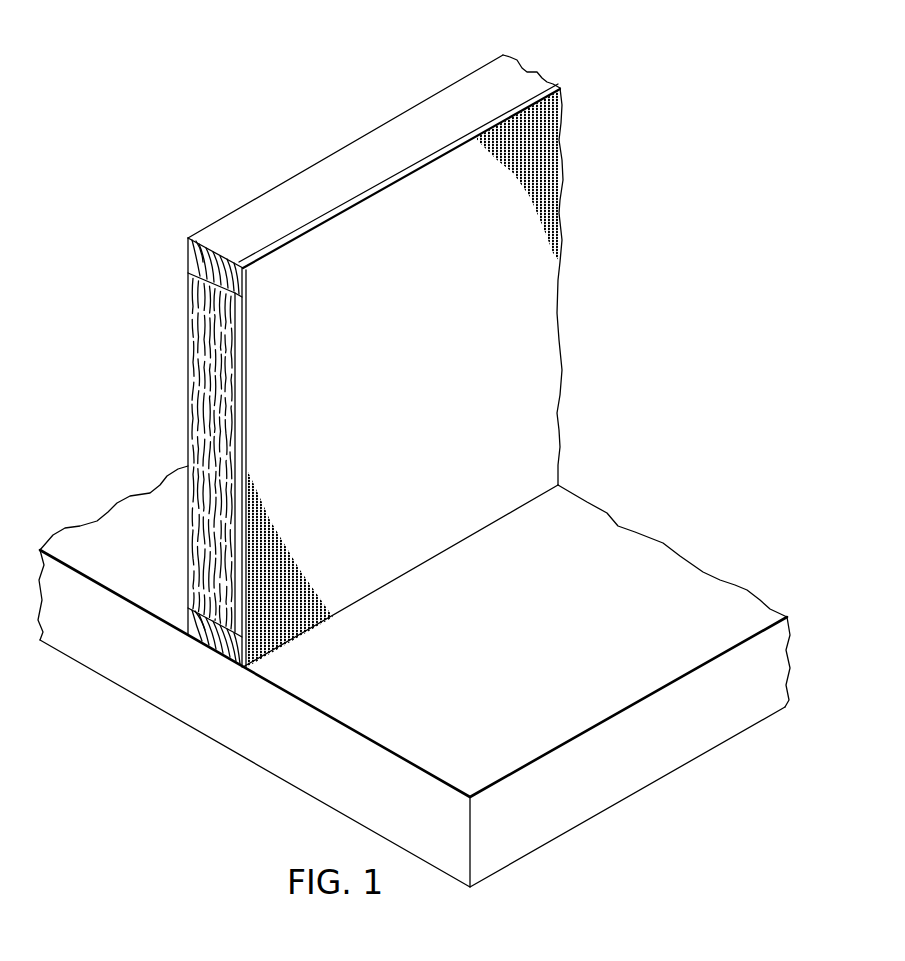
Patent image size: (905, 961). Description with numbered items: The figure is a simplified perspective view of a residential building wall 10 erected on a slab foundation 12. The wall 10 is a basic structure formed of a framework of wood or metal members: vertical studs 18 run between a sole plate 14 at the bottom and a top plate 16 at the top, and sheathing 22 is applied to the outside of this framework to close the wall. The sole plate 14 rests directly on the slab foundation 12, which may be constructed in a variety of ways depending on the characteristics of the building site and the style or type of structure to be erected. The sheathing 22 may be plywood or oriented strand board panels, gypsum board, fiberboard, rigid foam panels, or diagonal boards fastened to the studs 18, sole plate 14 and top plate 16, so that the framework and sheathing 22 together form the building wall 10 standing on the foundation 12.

The building wall 10 is at (168, 73).
The slab foundation 12 is at (718, 578).
The sole plate 14 is at (205, 640).
The top plate 16 is at (294, 192).
The studs 18 is at (195, 362).
The sheathing 22 is at (548, 340).